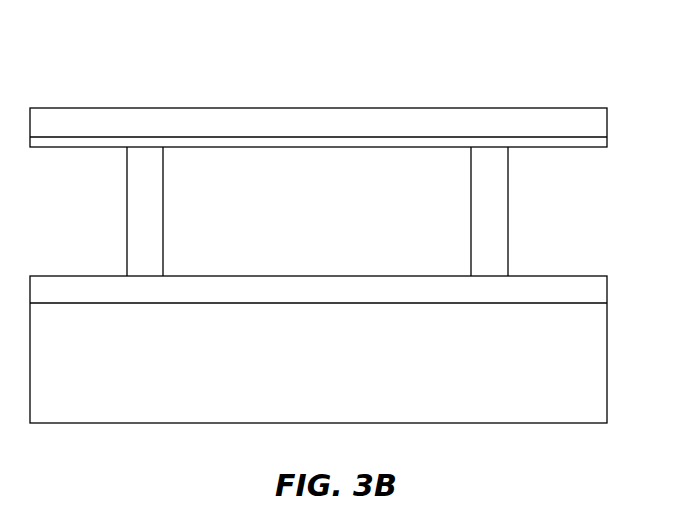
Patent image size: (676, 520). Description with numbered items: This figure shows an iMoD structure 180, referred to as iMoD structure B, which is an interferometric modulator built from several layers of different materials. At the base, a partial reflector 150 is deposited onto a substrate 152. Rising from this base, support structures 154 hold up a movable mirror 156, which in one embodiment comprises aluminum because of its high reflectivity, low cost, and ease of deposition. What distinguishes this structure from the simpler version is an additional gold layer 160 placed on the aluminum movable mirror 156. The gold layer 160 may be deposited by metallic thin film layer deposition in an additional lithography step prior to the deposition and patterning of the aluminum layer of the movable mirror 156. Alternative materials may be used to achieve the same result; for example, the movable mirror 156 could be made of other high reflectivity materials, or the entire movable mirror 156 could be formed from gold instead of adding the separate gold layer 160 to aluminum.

The iMoD structure 180 is at (441, 70).
The movable mirror 156 is at (568, 108).
The gold layer 160 is at (573, 147).
The support structures 154 is at (163, 201).
The partial reflector 150 is at (568, 276).
The substrate 152 is at (573, 423).